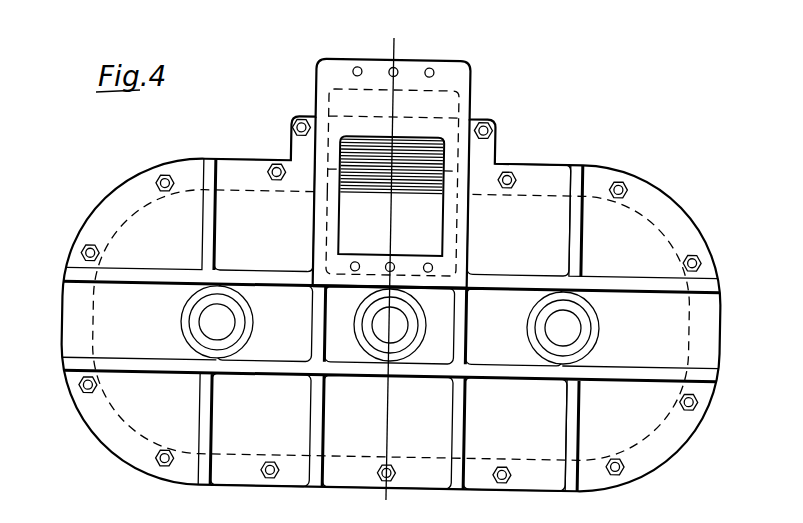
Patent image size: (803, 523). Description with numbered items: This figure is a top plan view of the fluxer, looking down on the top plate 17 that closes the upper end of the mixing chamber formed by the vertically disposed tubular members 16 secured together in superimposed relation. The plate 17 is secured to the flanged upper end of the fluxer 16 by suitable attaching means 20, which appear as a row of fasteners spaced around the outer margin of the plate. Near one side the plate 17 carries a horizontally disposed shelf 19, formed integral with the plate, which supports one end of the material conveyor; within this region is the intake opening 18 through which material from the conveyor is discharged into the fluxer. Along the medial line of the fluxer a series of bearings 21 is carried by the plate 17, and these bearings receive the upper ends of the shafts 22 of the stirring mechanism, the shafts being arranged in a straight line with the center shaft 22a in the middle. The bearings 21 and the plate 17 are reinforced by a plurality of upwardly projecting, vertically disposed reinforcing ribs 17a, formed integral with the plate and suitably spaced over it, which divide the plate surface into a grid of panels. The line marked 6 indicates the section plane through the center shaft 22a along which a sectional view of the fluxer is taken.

The section line 6- 6 is at (390, 269).
The tubular members 16 is at (647, 414).
The top plate 17 is at (638, 204).
The reinforcing ribs 17a is at (86, 357).
The intake opening 18 is at (426, 211).
The shelf 19 is at (449, 72).
The attaching means 20 is at (88, 250).
The bearings 21 is at (183, 334).
The shafts 22 is at (390, 325).
The center shaft 22a is at (400, 336).